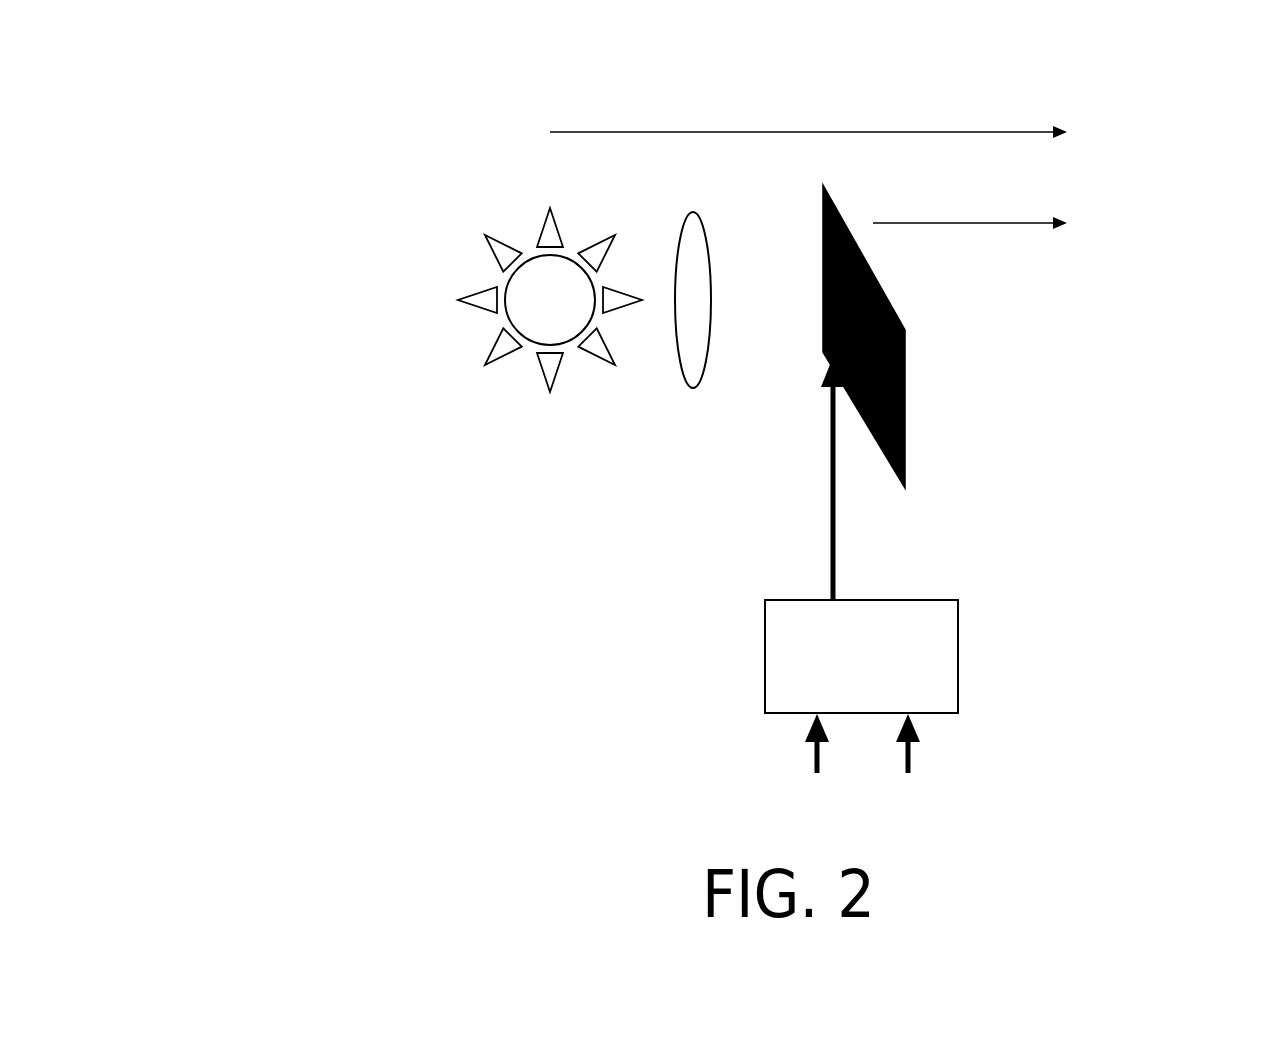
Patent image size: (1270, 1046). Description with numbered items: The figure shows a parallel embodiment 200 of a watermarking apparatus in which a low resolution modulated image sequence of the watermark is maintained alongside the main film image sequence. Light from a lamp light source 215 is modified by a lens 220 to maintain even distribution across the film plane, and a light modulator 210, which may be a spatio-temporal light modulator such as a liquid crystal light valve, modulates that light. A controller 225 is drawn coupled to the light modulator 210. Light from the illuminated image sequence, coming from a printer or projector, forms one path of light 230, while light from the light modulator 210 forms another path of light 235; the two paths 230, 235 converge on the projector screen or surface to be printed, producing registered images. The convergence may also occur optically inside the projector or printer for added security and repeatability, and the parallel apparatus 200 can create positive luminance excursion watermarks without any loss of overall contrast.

The parallel embodiment 200 is at (228, 455).
The light modulator 210 is at (905, 408).
The light source 215 is at (503, 283).
The lens 220 is at (680, 222).
The controller 225 is at (762, 663).
The path of light 230 is at (917, 131).
The path of light 235 is at (1013, 235).